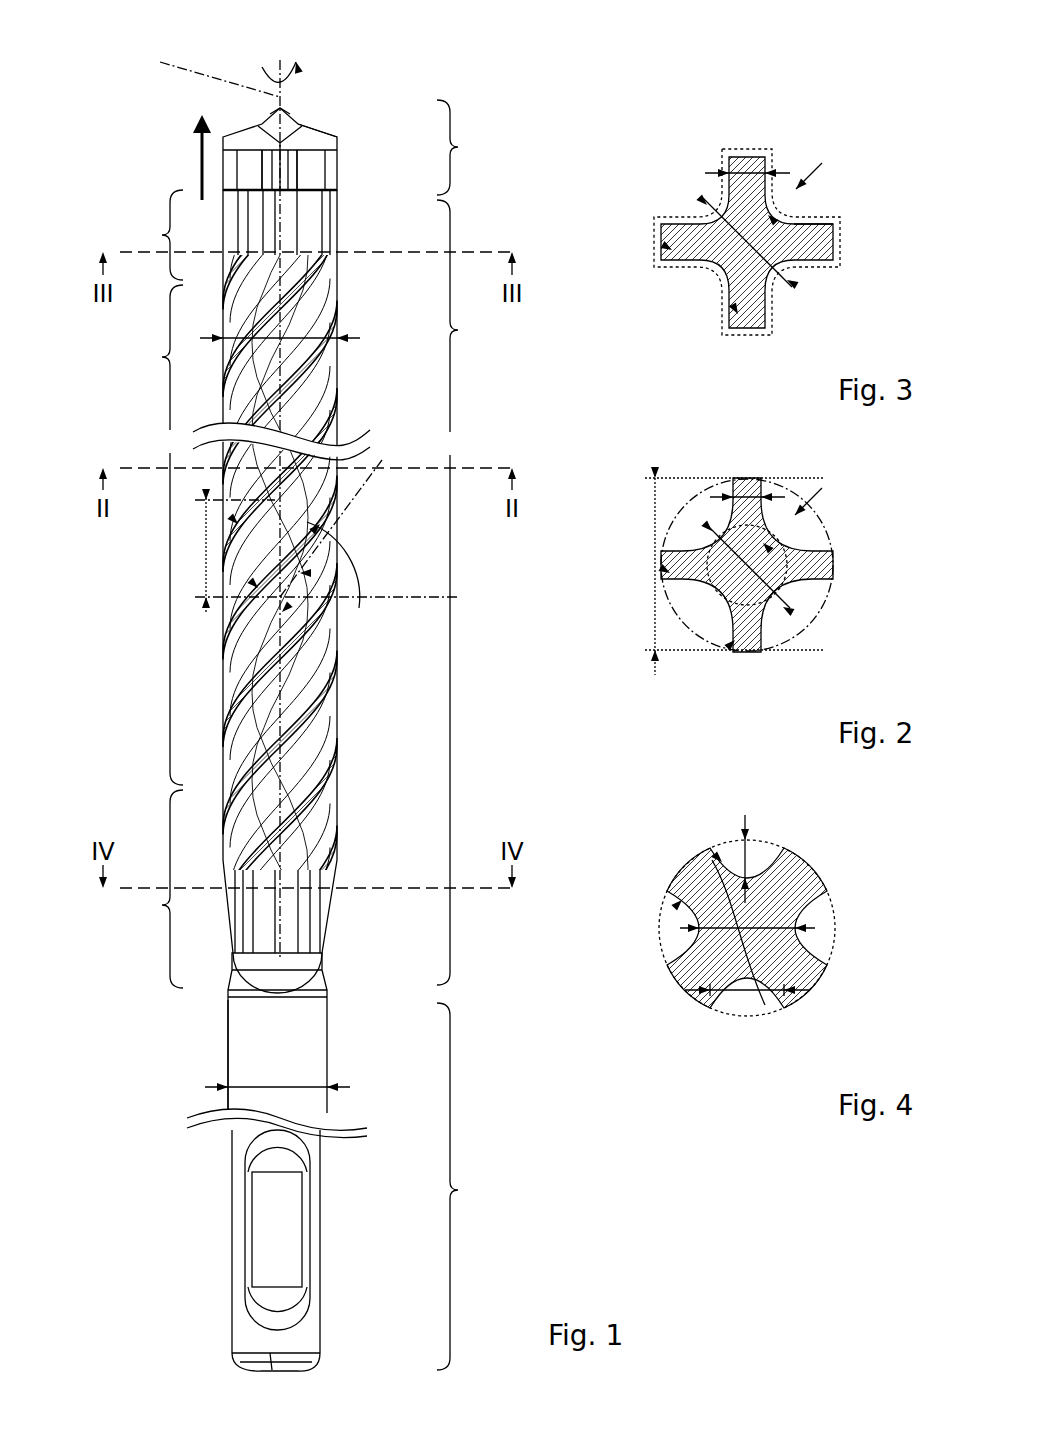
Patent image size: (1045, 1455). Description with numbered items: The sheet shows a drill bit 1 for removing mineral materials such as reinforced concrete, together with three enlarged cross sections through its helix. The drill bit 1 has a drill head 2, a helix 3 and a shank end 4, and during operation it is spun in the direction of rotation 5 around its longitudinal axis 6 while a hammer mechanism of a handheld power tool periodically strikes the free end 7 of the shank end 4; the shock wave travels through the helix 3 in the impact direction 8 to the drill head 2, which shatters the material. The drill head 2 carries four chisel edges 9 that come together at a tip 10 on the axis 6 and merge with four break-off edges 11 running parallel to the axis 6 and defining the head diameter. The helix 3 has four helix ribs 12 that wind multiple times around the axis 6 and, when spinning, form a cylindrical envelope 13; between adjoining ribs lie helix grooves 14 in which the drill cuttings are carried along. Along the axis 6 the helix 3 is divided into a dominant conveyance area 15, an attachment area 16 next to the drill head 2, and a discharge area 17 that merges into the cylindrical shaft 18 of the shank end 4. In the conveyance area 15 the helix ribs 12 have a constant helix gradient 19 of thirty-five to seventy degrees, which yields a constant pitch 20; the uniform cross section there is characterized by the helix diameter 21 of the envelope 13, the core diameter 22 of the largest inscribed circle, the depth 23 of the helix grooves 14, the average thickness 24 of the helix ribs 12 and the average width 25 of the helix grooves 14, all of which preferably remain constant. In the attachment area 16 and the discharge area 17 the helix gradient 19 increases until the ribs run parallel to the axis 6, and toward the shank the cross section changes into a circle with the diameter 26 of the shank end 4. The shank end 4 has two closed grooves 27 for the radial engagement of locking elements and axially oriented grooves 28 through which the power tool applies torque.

In FIG. 1, the drill bit 1 is at (108, 52).
In FIG. 1, the drill head 2 is at (352, 147).
In FIG. 3, the drill head 2 is at (705, 222).
In FIG. 1, the helix 3 is at (337, 521).
In FIG. 1, the shank end 4 is at (334, 1162).
In FIG. 1, the direction of rotation 5 is at (262, 75).
In FIG. 1, the longitudinal axis 6 is at (392, 410).
In FIG. 1, the free end 7 is at (265, 1368).
In FIG. 1, the impact direction 8 is at (200, 162).
In FIG. 1, the chisel edges 9 is at (313, 128).
In FIG. 1, the tip 10 is at (283, 108).
In FIG. 1, the break-off edges 11 is at (285, 168).
In FIG. 3, the break-off edges 11 is at (656, 248).
In FIG. 1, the helix ribs 12 is at (283, 680).
In FIG. 3, the helix ribs 12 is at (812, 240).
In FIG. 2, the helix ribs 12 is at (812, 578).
In FIG. 4, the helix ribs 12 is at (792, 878).
In FIG. 2, the cylindrical envelope 13 is at (830, 517).
In FIG. 4, the cylindrical envelope 13 is at (838, 932).
In FIG. 1, the helix groove 14 is at (283, 640).
In FIG. 3, the helix groove 14 is at (820, 282).
In FIG. 2, the helix groove 14 is at (809, 622).
In FIG. 4, the helix groove 14 is at (818, 915).
In FIG. 1, the conveyance area 15 is at (155, 535).
In FIG. 1, the attachment area 16 is at (229, 235).
In FIG. 1, the discharge area 17 is at (227, 891).
In FIG. 1, the cylindrical shaft 18 is at (313, 1027).
In FIG. 1, the helix gradient 19 is at (355, 560).
In FIG. 1, the pitch 20 is at (206, 545).
In FIG. 1, the helix diameter 21 is at (290, 337).
In FIG. 2, the helix diameter 21 is at (655, 605).
In FIG. 3, the core diameter 22 is at (742, 300).
In FIG. 2, the core diameter 22 is at (738, 628).
In FIG. 4, the core diameter 22 is at (786, 996).
In FIG. 3, the depth of the helix grooves 23 is at (790, 193).
In FIG. 2, the depth of the helix grooves 23 is at (793, 517).
In FIG. 4, the depth of the helix grooves 23 is at (735, 865).
In FIG. 1, the average thickness of the helix ribs 24 is at (277, 597).
In FIG. 3, the average thickness of the helix ribs 24 is at (745, 162).
In FIG. 2, the average thickness of the helix ribs 24 is at (745, 497).
In FIG. 4, the average thickness of the helix ribs 24 is at (700, 872).
In FIG. 1, the average width of the helix grooves 25 is at (272, 548).
In FIG. 3, the average width of the helix grooves 25 is at (708, 272).
In FIG. 2, the average width of the helix grooves 25 is at (698, 578).
In FIG. 4, the average width of the helix grooves 25 is at (737, 990).
In FIG. 1, the diameter of the shank end 26 is at (282, 1087).
In FIG. 1, the closed grooves 27 is at (275, 1225).
In FIG. 1, the grooves 28 is at (232, 1243).